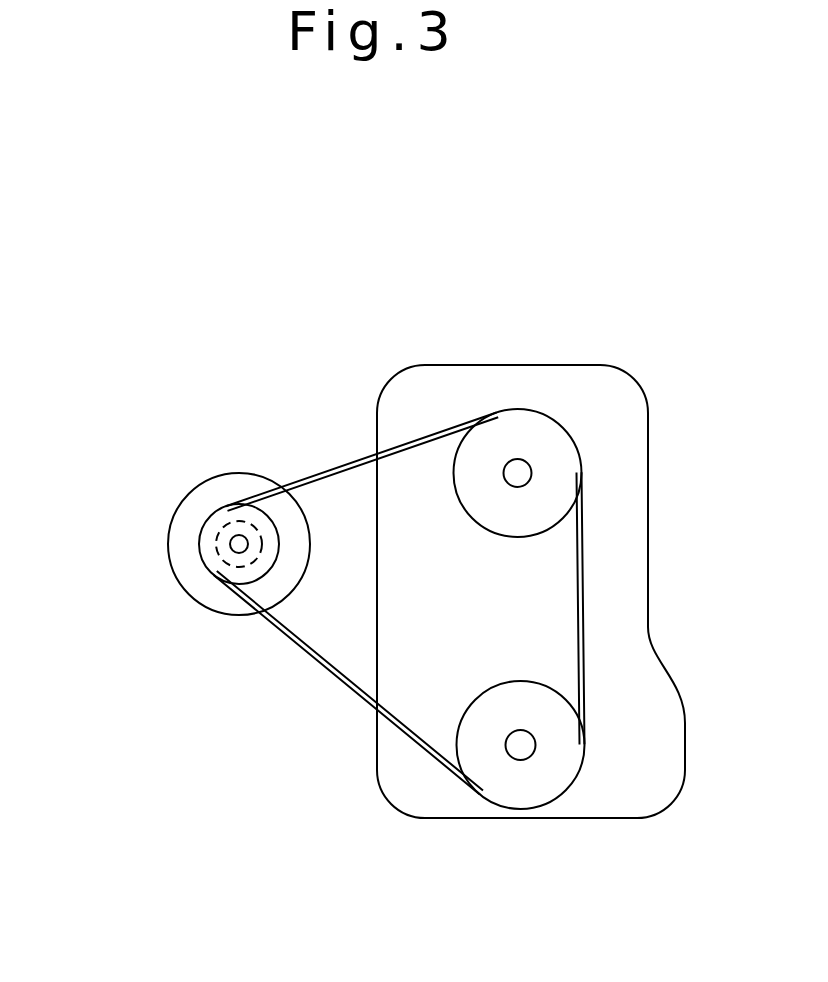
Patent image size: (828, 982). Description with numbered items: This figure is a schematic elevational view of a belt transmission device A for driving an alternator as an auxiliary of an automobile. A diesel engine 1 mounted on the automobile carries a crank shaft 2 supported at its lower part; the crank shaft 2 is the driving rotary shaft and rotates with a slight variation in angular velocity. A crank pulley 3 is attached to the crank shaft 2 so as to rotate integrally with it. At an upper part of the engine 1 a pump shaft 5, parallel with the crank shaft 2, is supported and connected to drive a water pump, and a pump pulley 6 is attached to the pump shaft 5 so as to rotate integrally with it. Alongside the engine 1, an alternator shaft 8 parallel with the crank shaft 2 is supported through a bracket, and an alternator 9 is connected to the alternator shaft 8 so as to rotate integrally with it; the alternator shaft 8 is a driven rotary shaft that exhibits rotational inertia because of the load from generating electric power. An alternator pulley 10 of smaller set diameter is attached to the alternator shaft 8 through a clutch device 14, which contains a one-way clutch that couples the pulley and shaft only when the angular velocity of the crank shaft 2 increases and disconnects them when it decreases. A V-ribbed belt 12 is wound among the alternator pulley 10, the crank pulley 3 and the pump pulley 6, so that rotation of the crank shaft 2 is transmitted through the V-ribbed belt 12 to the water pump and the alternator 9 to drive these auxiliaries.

The diesel engine 1 is at (625, 392).
The crank shaft 2 is at (520, 760).
The crank pulley 3 is at (557, 777).
The pump shaft 5 is at (519, 460).
The pump pulley 6 is at (498, 432).
The alternator shaft 8 is at (228, 527).
The alternator 9 is at (228, 473).
The alternator pulley 10 is at (203, 557).
The V-ribbed belt 12 is at (320, 663).
The clutch device 14 is at (225, 565).
The belt transmission device A is at (443, 763).